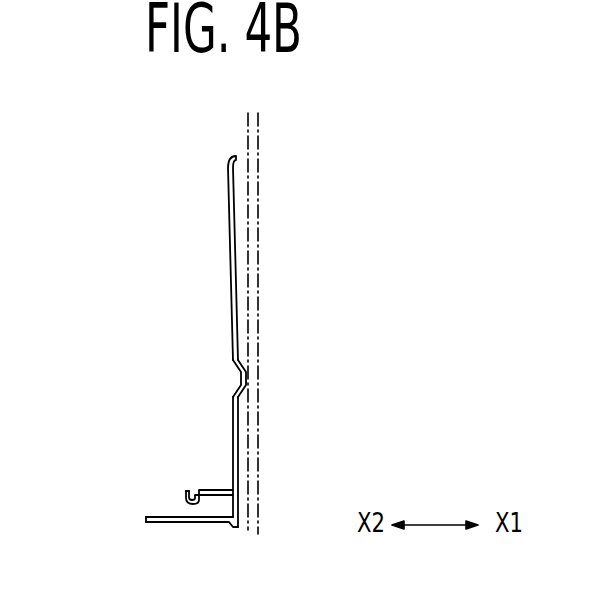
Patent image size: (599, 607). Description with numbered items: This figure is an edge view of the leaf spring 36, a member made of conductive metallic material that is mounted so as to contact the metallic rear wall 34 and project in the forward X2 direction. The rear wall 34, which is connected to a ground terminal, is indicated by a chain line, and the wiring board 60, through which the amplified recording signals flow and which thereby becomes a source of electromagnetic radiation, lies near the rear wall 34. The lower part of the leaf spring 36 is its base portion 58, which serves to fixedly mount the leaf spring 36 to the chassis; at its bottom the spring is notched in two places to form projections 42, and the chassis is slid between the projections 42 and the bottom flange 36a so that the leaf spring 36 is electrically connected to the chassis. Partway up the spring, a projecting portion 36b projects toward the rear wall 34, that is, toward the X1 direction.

The rear wall 34 is at (258, 179).
The leaf spring 36 is at (72, 184).
The wiring board 60 is at (230, 299).
The projecting portion 36b is at (234, 375).
The base portion 58 is at (230, 432).
The projections 42 is at (218, 490).
The bottom flange 36a is at (162, 523).